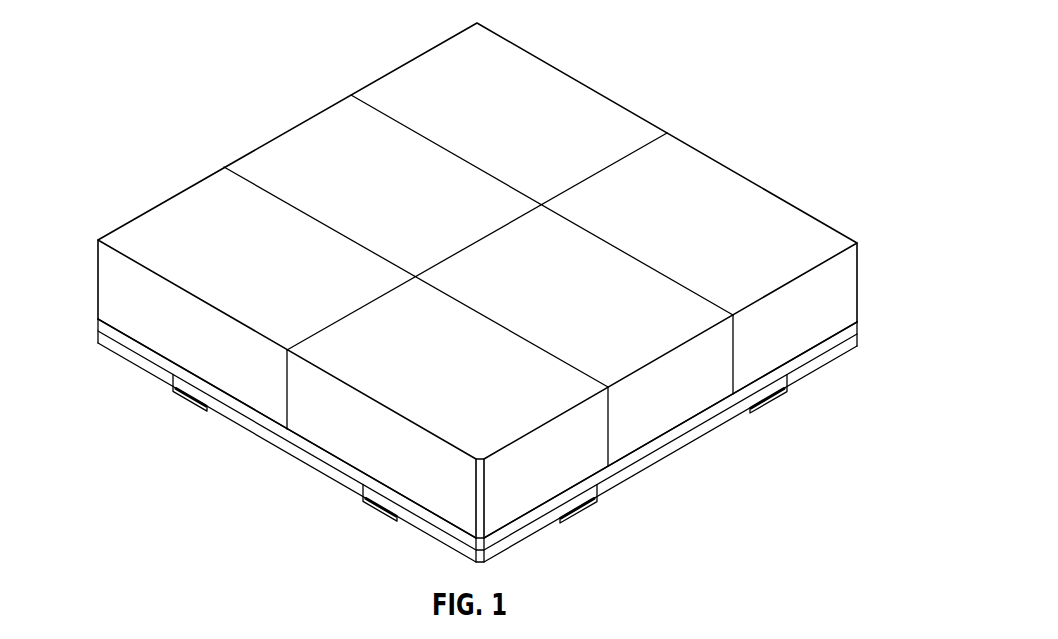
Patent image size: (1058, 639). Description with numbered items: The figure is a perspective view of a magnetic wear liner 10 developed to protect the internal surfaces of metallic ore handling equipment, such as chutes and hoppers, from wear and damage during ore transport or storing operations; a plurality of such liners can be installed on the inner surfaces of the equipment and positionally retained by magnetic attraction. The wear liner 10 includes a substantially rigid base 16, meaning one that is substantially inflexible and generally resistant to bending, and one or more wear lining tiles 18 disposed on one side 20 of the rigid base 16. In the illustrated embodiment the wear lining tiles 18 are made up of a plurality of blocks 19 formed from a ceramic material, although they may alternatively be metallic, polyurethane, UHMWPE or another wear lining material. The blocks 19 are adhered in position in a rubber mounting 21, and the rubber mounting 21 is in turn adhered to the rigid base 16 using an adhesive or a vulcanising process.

The magnetic wear liner 10 is at (86, 412).
The rigid base 16 is at (827, 355).
The wear lining tiles 18 is at (667, 170).
The blocks 19 is at (277, 272).
The one side of the rigid base 20 is at (837, 335).
The rubber mounting 21 is at (340, 464).